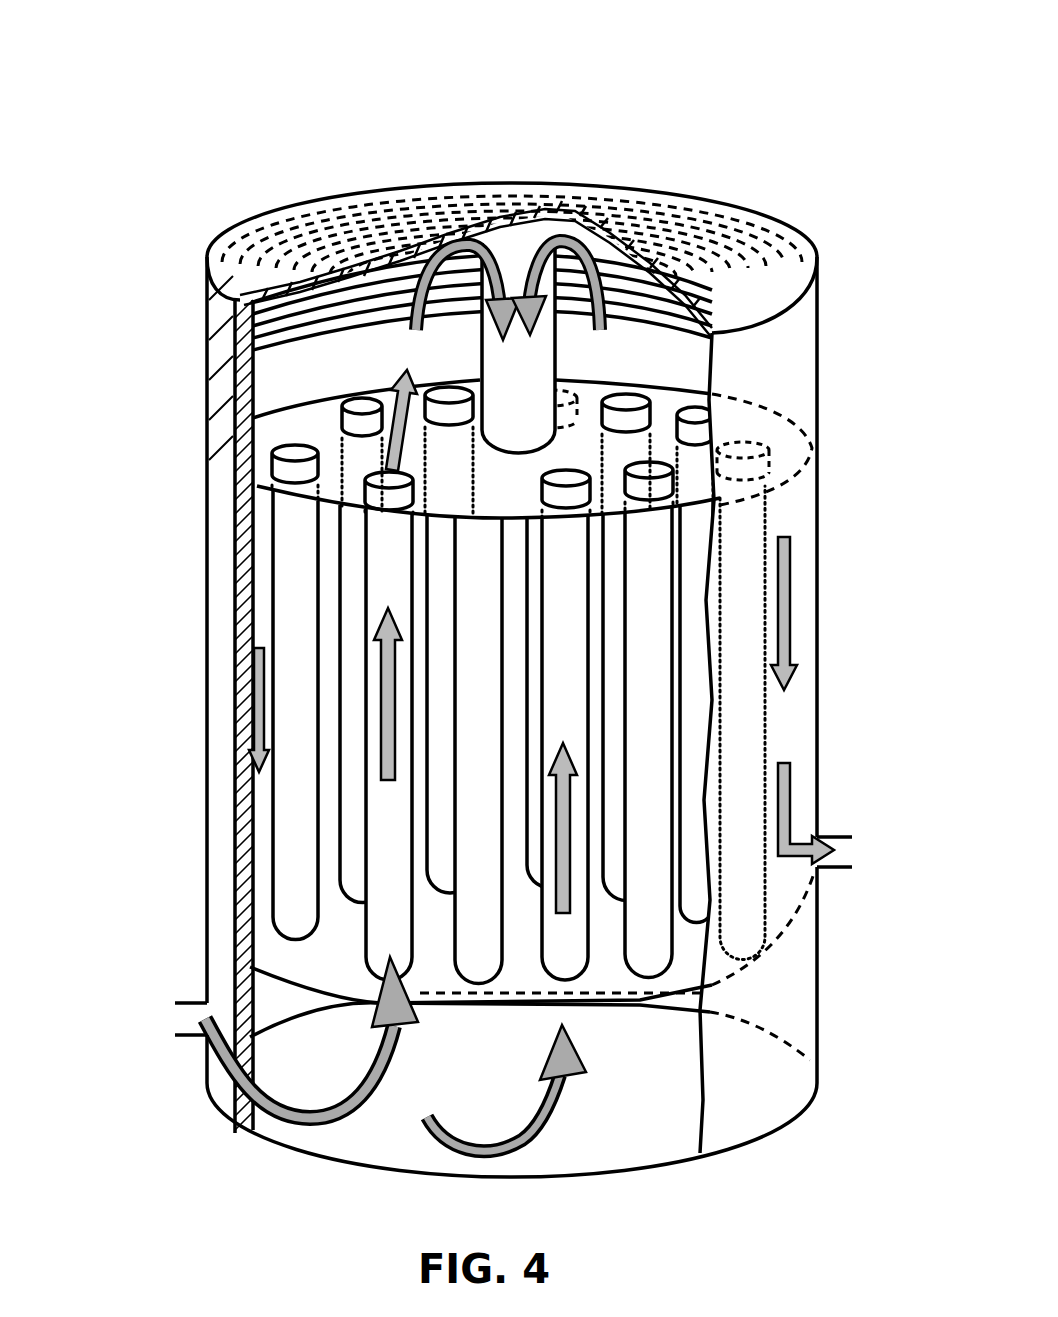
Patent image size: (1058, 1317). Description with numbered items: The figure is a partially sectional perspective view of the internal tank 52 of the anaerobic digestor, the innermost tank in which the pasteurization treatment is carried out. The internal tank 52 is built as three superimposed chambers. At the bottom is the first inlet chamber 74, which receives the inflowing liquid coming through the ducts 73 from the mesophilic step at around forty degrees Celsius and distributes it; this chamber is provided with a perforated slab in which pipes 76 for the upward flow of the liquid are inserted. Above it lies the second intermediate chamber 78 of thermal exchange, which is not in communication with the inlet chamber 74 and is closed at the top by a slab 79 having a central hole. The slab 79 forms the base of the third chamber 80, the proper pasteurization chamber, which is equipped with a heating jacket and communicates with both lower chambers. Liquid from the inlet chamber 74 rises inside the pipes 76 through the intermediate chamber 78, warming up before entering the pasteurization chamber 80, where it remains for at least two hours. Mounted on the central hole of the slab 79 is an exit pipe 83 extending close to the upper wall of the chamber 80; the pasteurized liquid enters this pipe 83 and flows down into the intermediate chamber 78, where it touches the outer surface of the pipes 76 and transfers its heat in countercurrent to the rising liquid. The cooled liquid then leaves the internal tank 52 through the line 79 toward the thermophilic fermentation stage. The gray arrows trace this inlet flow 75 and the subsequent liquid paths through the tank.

The internal tank 52 is at (505, 142).
The ducts 73 is at (190, 1019).
The first inlet chamber 74 is at (665, 1106).
The inlet flow path 75 is at (362, 985).
The pipes 76 is at (290, 630).
The second intermediate chamber 78 is at (345, 980).
The slab 79 is at (675, 400).
The third chamber 80 is at (318, 394).
The exit pipe 83 is at (535, 345).